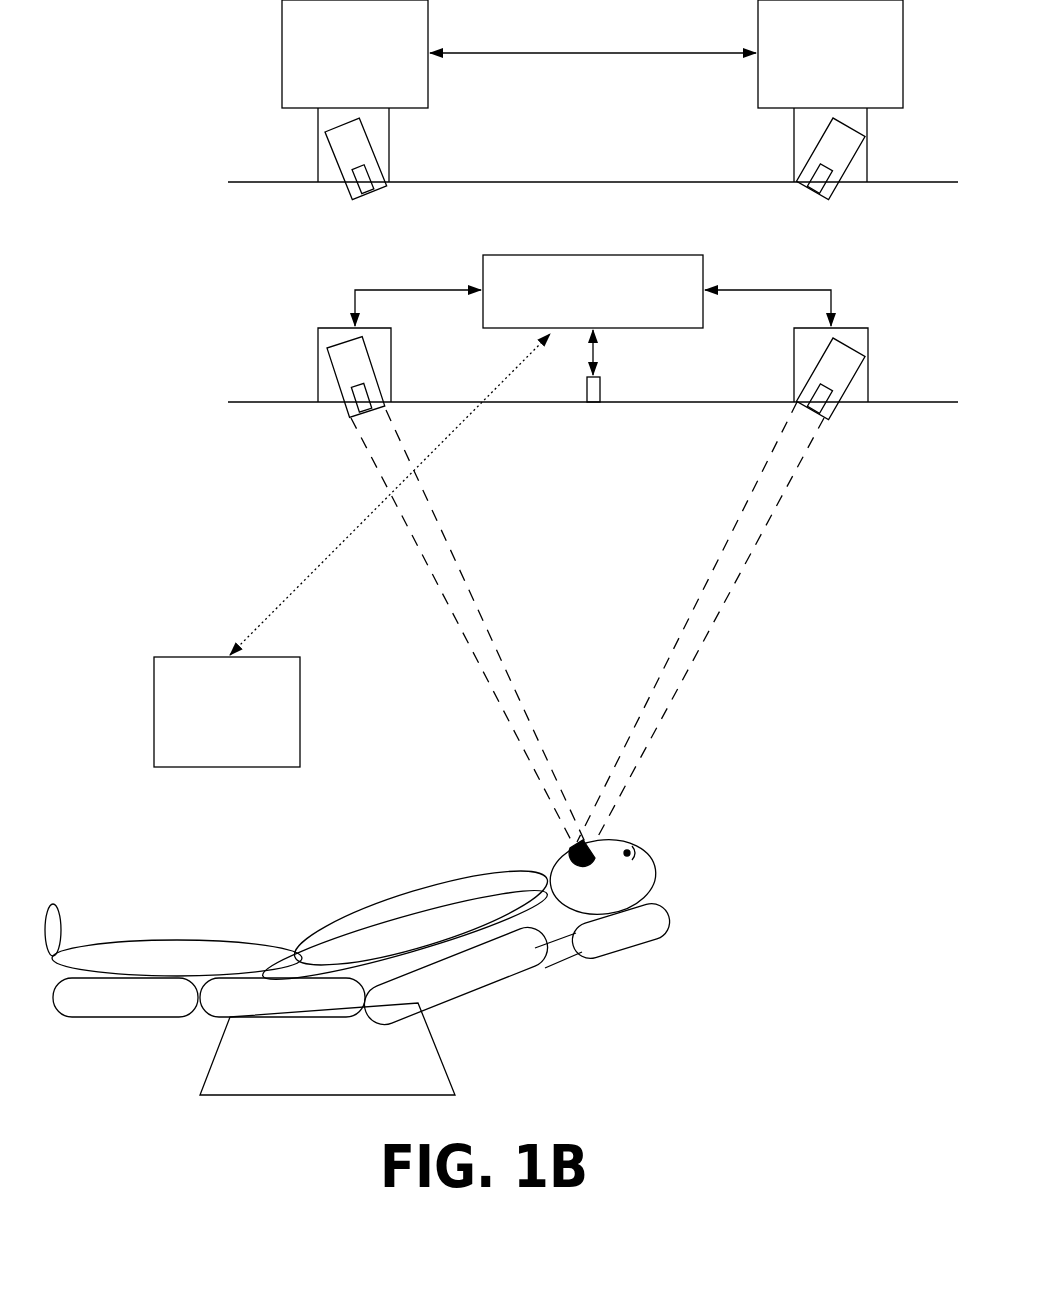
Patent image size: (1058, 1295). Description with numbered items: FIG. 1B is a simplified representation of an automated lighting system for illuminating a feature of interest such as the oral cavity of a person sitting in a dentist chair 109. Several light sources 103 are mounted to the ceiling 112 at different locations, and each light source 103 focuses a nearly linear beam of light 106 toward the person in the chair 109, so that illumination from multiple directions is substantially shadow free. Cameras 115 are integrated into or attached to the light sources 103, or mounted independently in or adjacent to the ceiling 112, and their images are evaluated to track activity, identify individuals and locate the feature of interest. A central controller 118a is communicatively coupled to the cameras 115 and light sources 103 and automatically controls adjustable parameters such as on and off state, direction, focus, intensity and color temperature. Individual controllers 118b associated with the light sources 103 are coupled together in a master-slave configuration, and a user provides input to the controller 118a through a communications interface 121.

The light source 103 is at (318, 165).
The beam of light 106 is at (465, 640).
The dentist chair 109 is at (670, 949).
The ceiling 112 is at (265, 187).
The camera 115 is at (363, 405).
The central controller 118a is at (593, 315).
The controller 118b is at (592, 54).
The communications interface 121 is at (352, 550).